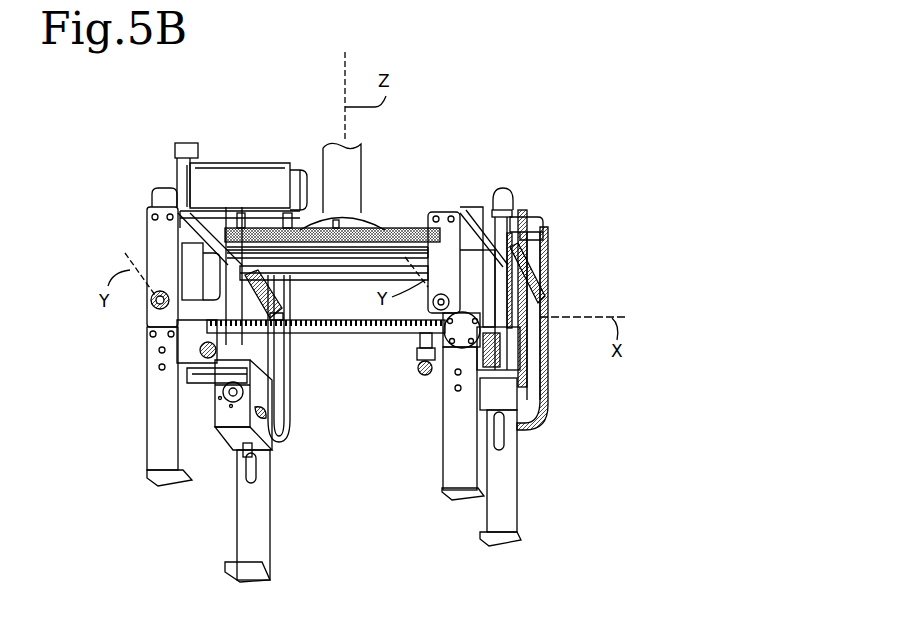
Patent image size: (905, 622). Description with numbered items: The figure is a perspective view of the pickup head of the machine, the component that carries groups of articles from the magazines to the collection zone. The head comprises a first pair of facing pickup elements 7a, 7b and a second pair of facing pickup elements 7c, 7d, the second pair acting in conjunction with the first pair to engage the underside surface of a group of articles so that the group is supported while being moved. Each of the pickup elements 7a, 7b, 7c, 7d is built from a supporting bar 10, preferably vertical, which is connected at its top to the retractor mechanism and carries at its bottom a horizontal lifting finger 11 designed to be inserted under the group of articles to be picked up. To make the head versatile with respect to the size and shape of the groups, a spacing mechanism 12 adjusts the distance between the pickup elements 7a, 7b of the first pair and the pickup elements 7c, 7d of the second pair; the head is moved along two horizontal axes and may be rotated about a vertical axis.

The pickup element 7a is at (280, 531).
The pickup element 7b is at (141, 421).
The pickup element 7c is at (526, 476).
The pickup element 7d is at (434, 420).
The supporting bar 10 is at (147, 373).
The lifting finger 11 is at (173, 567).
The spacing mechanism 12 is at (352, 339).